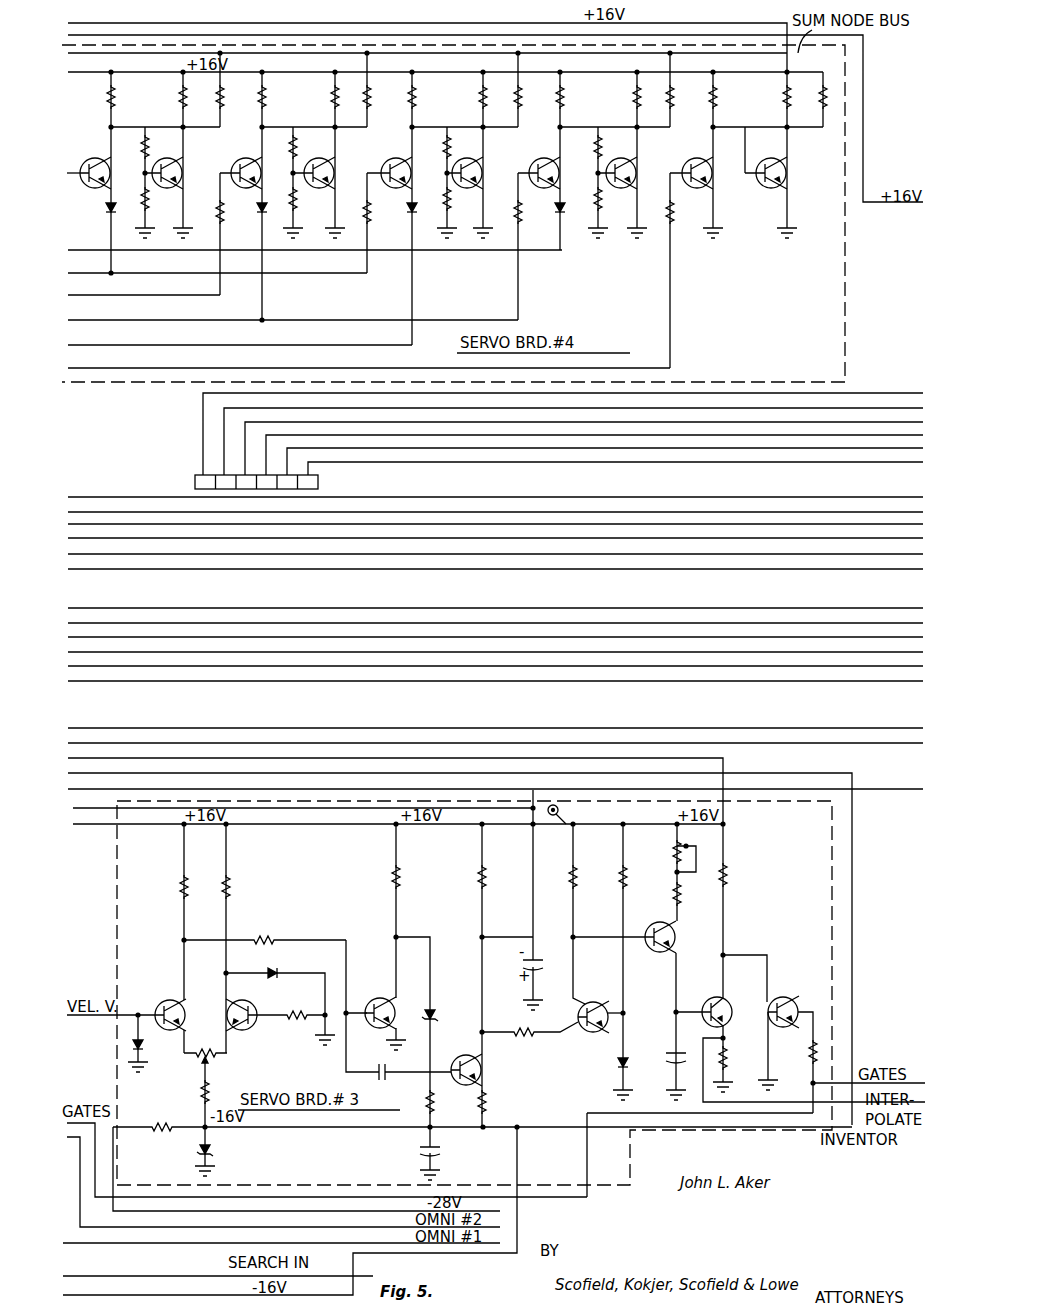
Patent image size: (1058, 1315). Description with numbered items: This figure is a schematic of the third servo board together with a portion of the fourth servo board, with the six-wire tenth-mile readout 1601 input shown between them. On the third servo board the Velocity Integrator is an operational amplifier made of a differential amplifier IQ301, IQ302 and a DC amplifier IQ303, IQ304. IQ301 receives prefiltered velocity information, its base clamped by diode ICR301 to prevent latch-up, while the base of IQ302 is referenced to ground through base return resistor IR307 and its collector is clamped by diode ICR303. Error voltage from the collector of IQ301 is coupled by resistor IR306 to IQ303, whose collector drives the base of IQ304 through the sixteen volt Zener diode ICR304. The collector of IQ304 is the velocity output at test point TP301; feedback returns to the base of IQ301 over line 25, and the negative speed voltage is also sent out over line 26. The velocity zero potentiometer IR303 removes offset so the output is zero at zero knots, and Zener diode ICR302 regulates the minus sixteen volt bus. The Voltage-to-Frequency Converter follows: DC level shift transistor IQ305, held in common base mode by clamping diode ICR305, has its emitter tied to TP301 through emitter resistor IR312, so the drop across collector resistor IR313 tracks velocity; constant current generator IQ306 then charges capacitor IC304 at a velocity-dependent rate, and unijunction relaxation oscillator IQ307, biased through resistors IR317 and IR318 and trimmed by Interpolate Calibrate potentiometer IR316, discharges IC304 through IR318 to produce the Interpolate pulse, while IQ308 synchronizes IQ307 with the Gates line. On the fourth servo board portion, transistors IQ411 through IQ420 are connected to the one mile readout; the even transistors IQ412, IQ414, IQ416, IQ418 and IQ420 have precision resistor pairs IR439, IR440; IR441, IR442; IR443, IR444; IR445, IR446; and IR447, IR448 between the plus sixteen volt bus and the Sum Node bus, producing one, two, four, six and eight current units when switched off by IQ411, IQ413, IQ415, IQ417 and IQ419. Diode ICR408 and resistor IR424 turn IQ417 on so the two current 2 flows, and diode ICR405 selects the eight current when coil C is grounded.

The transistor IQ411 is at (102, 150).
The transistor IQ412 is at (178, 162).
The transistor IQ413 is at (250, 159).
The transistor IQ414 is at (333, 162).
The transistor IQ415 is at (400, 159).
The transistor IQ416 is at (478, 162).
The transistor IQ417 is at (548, 159).
The transistor IQ418 is at (634, 162).
The transistor IQ419 is at (738, 187).
The transistor IQ420 is at (784, 162).
The resistor IR439 is at (182, 94).
The resistor IR440 is at (218, 92).
The resistor IR441 is at (332, 94).
The resistor IR442 is at (366, 92).
The resistor IR443 is at (482, 94).
The resistor IR444 is at (517, 92).
The resistor IR445 is at (634, 94).
The resistor IR446 is at (668, 92).
The resistor IR447 is at (784, 94).
The resistor IR448 is at (821, 92).
The resistor IR424 is at (522, 225).
The diode ICR405 is at (110, 214).
The diode ICR408 is at (563, 214).
The 1/10 mile readout 1601 is at (559, 442).
The line 25 is at (83, 824).
The line 26 is at (544, 797).
The test point TP301 is at (580, 814).
The transistor IQ301 is at (172, 999).
The transistor IQ302 is at (254, 1008).
The transistor IQ303 is at (367, 1028).
The transistor IQ304 is at (459, 975).
The DC level shift transistor IQ305 is at (600, 1038).
The constant current generator IQ306 is at (651, 924).
The unijunction relaxation oscillator IQ307 is at (730, 1000).
The transistor IQ308 is at (841, 1047).
The velocity zero potentiometer IR303 is at (207, 1058).
The resistor IR306 is at (266, 932).
The base return resistor IR307 is at (292, 1019).
The emitter resistor IR312 is at (524, 1036).
The collector resistor IR313 is at (576, 878).
The Interpolate Calibrate adjust potentiometer IR316 is at (675, 856).
The resistor IR317 is at (726, 878).
The resistor IR318 is at (723, 1059).
The clamping diode ICR301 is at (147, 1047).
The Zener diode ICR302 is at (217, 1149).
The clamping diode ICR303 is at (280, 997).
The Zener diode ICR304 is at (440, 1005).
The base clamping diode ICR305 is at (620, 1065).
The capacitor IC304 is at (676, 1056).
The two current 2 is at (717, 1002).